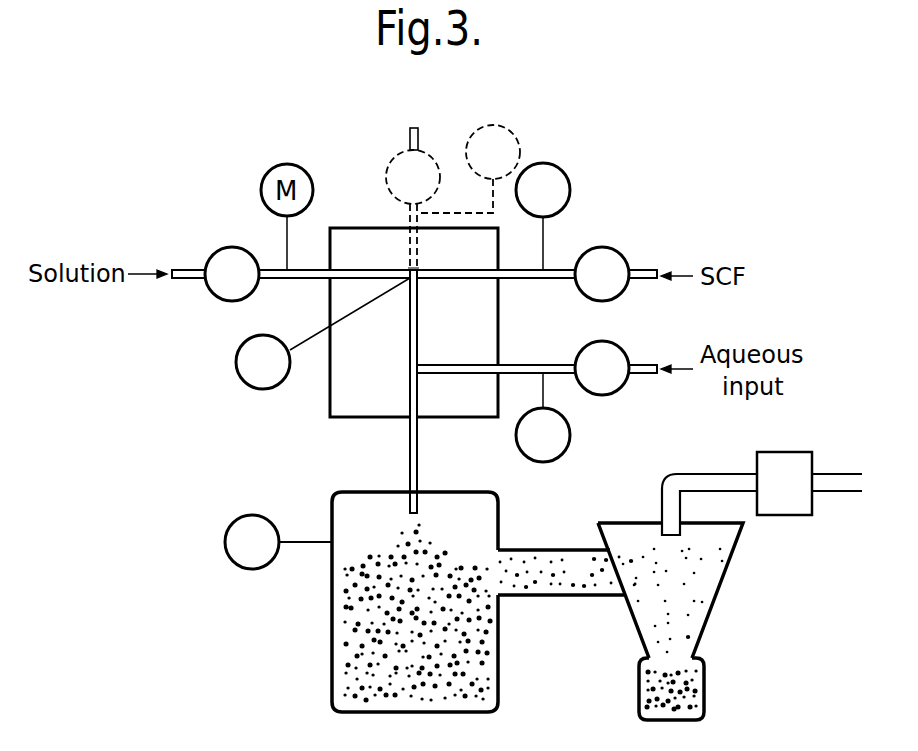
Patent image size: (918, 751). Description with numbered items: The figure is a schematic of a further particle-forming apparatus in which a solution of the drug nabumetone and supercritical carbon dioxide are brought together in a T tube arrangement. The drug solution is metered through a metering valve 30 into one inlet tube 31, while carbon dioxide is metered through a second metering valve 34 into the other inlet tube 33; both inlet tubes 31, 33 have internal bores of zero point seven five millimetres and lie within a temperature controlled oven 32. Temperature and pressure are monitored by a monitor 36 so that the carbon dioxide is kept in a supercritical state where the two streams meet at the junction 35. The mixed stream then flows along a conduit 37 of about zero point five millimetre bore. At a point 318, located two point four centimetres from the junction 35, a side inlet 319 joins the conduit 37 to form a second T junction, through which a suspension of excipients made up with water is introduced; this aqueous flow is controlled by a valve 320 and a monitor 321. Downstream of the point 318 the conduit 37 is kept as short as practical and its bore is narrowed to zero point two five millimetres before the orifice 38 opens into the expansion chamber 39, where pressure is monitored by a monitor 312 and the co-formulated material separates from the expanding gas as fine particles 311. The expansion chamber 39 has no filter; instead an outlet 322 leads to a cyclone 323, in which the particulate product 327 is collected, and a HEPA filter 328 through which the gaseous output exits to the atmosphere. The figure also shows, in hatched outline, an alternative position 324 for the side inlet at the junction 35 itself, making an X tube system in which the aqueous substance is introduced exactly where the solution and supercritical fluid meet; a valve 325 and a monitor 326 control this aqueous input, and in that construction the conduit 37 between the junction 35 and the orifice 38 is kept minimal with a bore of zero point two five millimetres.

The metering valve 30 is at (228, 250).
The inlet tube 31 is at (273, 290).
The temperature controlled oven 32 is at (327, 392).
The inlet tube 33 is at (641, 272).
The metering valve 34 is at (603, 258).
The junction 35 is at (410, 266).
The monitor 36 is at (562, 186).
The conduit 37 is at (410, 393).
The orifice 38 is at (412, 521).
The expansion chamber 39 is at (332, 682).
The fine particles 311 is at (378, 588).
The monitor 312 is at (226, 540).
The point 318 is at (420, 372).
The side inlet 319 is at (522, 365).
The valve 320 is at (622, 386).
The monitor 321 is at (562, 445).
The outlet 322 is at (557, 597).
The cyclone 323 is at (712, 610).
The alternative side inlet position 324 is at (420, 135).
The valve 325 is at (400, 160).
The monitor 326 is at (510, 140).
The particulate product 327 is at (690, 695).
The HEPA filter 328 is at (787, 516).